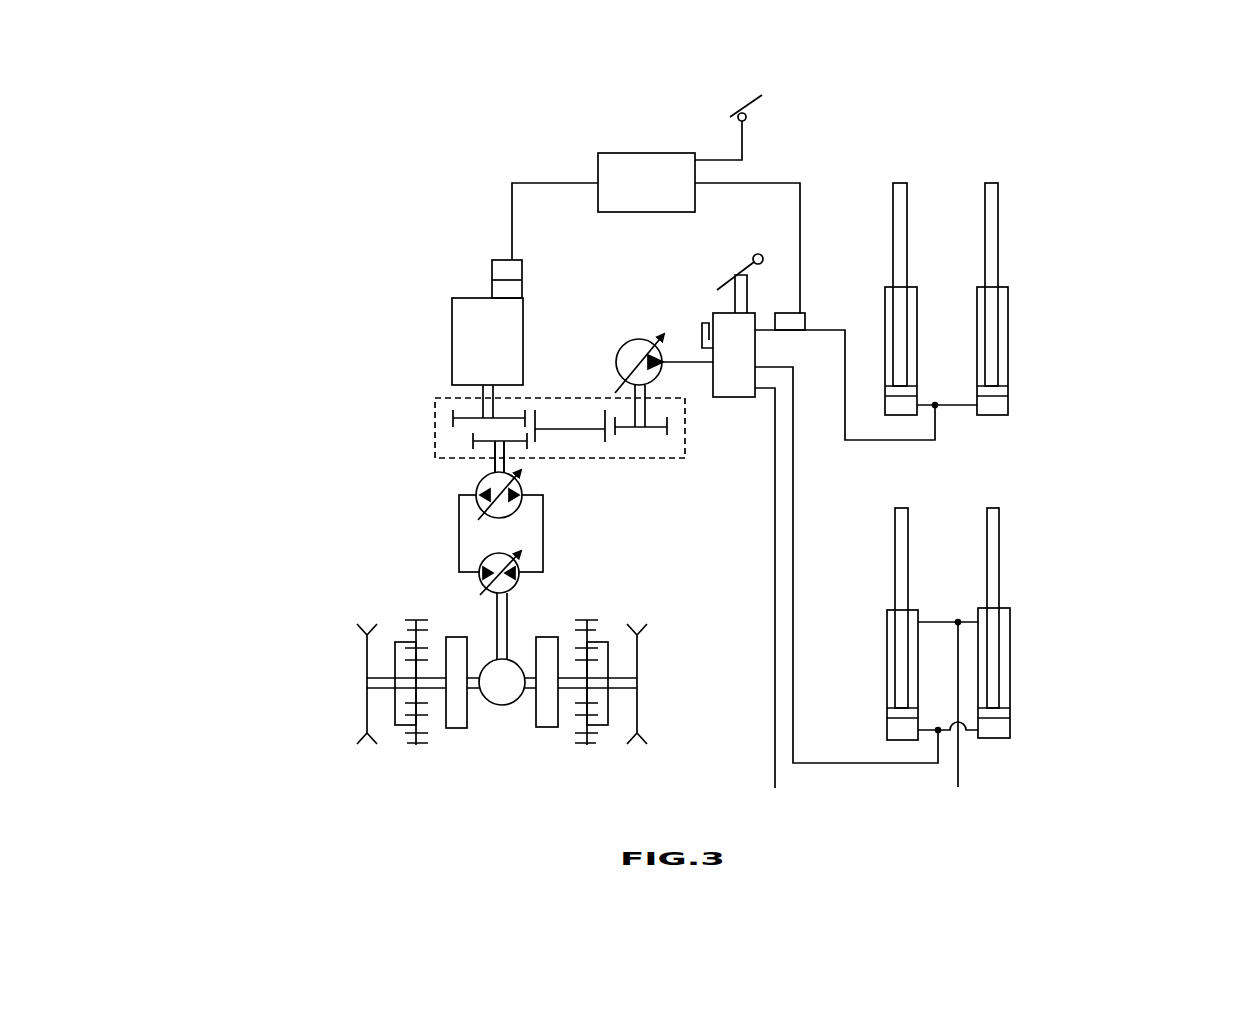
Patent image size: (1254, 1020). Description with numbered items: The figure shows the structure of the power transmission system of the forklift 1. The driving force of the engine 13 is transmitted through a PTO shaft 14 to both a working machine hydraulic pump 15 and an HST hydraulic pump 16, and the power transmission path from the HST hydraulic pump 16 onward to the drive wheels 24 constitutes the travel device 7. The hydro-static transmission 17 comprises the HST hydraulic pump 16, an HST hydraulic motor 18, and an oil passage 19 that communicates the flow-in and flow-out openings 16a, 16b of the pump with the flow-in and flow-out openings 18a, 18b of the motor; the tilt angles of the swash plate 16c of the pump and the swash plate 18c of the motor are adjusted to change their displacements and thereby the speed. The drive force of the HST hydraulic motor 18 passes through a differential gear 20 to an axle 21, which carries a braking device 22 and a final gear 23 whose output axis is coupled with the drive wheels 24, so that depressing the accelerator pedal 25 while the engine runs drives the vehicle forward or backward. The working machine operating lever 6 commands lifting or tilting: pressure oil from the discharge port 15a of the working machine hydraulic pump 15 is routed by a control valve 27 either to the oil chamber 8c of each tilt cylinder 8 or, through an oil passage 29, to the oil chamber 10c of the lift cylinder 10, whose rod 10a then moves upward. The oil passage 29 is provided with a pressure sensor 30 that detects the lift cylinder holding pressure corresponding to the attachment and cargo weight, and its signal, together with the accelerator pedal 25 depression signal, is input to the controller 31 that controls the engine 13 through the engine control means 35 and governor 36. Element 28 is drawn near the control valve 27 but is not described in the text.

The forklift 1 is at (960, 132).
The working machine operating lever 6 is at (735, 275).
The travel device 7 is at (233, 735).
The tilt cylinder 8 is at (927, 603).
The oil chamber 8c is at (890, 730).
The lift cylinder 10 is at (925, 280).
The rod 10a is at (985, 207).
The oil chamber 10c is at (890, 405).
The engine 13 is at (452, 358).
The PTO shaft 14 is at (433, 432).
The working machine hydraulic pump 15 is at (616, 370).
The discharge port 15a is at (665, 363).
The HST hydraulic pump 16 is at (413, 493).
The flow-in opening 16a is at (476, 494).
The flow-out opening 16b is at (521, 492).
The swash plate 16c is at (481, 511).
The hydro-static transmission (HST) 17 is at (567, 524).
The HST hydraulic motor 18 is at (394, 586).
The flow-in opening 18a is at (482, 574).
The flow-out opening 18b is at (517, 582).
The swash plate 18c is at (493, 593).
The oil passage 19 is at (543, 535).
The differential gear 20 is at (518, 660).
The axle 21 is at (473, 692).
The braking device 22 is at (536, 710).
The final gear 23 is at (597, 745).
The drive wheels 24 is at (360, 625).
The accelerator pedal 25 is at (738, 112).
The control valve 27 is at (735, 397).
The sensor 28 is at (700, 340).
The oil passage 29 is at (823, 332).
The pressure sensor 30 is at (805, 313).
The controller 31 is at (612, 153).
The engine control means 35 is at (557, 255).
The governor 36 is at (492, 292).